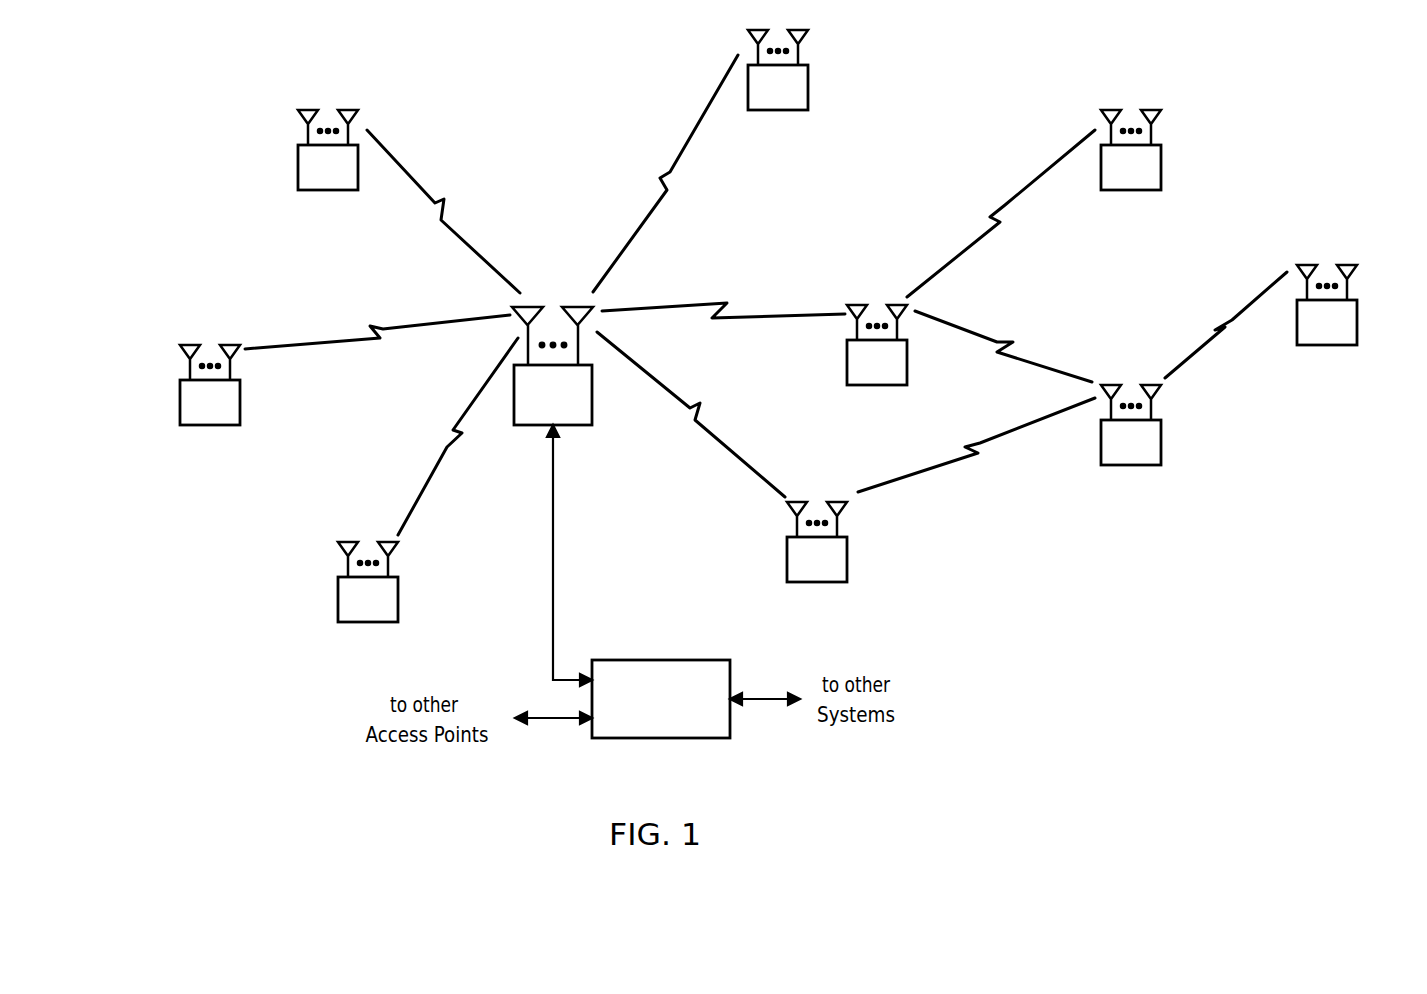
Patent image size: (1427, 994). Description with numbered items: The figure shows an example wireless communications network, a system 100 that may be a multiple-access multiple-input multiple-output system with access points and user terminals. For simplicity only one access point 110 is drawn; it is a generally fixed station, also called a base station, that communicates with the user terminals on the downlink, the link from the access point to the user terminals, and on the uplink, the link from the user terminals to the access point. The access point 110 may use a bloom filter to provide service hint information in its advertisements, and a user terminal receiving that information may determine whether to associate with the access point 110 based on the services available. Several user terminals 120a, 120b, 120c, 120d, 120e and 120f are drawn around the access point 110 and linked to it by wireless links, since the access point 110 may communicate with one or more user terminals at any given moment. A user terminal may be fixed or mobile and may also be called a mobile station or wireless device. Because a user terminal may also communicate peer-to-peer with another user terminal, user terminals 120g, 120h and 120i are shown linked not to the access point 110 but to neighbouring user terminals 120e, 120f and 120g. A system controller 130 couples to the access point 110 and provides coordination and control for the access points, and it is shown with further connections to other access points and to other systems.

The system 100 is at (1338, 70).
The access point 110 is at (578, 427).
The user terminal 120a is at (338, 610).
The user terminal 120b is at (180, 411).
The user terminal 120c is at (298, 177).
The user terminal 120d is at (808, 98).
The user terminal 120e is at (847, 372).
The user terminal 120f is at (847, 569).
The user terminal 120g is at (1161, 450).
The user terminal 120h is at (1357, 333).
The user terminal 120i is at (1161, 176).
The system controller 130 is at (653, 660).